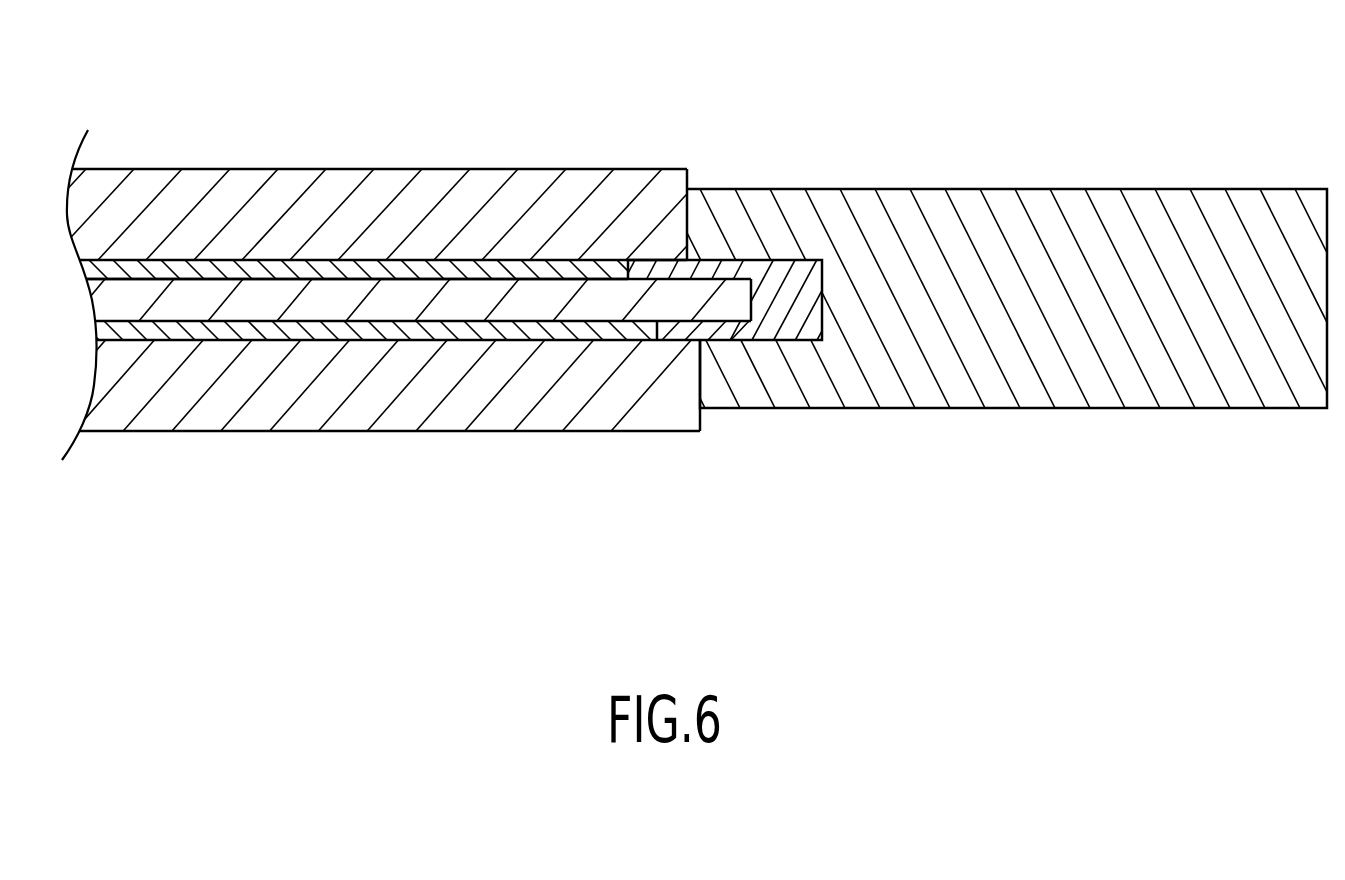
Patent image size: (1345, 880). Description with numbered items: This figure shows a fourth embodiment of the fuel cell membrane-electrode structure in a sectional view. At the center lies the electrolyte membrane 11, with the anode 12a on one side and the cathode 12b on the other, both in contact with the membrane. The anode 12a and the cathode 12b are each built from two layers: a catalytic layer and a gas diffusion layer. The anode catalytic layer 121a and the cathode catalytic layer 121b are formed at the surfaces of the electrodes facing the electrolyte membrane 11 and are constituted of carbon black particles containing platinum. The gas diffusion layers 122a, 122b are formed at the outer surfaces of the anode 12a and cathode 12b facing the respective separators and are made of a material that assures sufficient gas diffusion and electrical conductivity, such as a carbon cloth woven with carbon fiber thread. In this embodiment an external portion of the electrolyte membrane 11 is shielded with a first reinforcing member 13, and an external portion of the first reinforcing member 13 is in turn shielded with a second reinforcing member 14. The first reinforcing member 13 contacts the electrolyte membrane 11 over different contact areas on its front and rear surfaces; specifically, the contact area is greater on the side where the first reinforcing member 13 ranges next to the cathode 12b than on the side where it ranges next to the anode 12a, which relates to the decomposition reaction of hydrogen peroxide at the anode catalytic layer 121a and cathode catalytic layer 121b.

The electrolyte membrane 11 is at (577, 293).
The anode 12a is at (518, 525).
The cathode 12b is at (518, 77).
The anode catalytic layer 121a is at (377, 332).
The cathode catalytic layer 121b is at (375, 270).
The gas diffusion layer 122a is at (477, 413).
The gas diffusion layer 122b is at (478, 200).
The first reinforcing member 13 is at (793, 312).
The second reinforcing member 14 is at (968, 388).